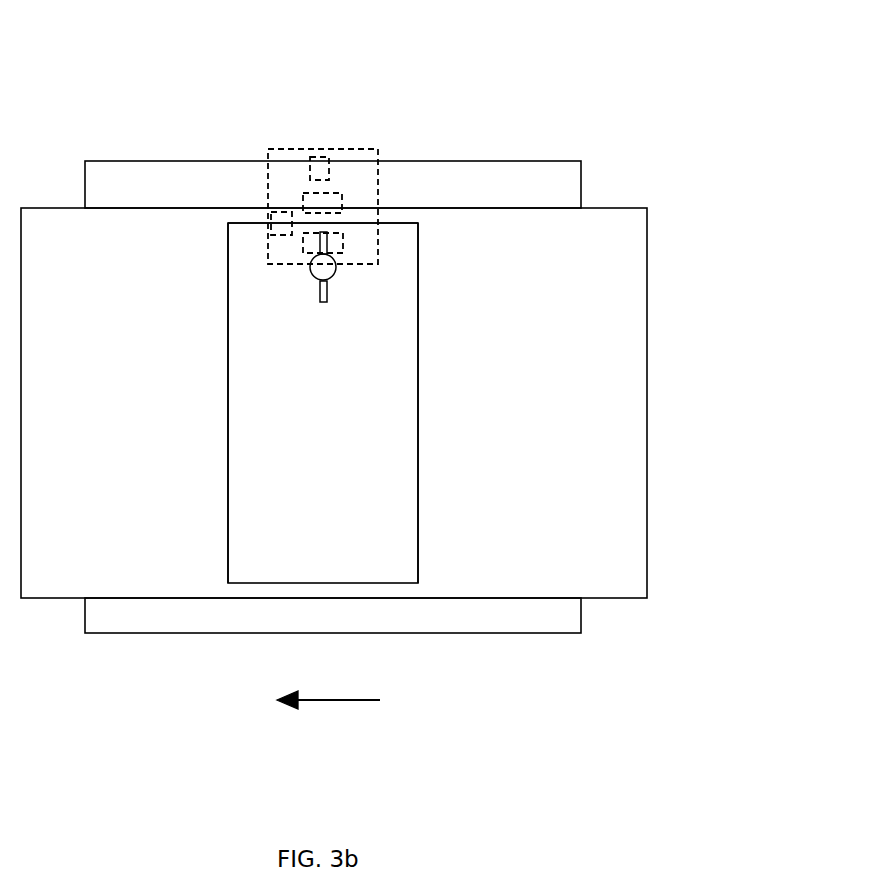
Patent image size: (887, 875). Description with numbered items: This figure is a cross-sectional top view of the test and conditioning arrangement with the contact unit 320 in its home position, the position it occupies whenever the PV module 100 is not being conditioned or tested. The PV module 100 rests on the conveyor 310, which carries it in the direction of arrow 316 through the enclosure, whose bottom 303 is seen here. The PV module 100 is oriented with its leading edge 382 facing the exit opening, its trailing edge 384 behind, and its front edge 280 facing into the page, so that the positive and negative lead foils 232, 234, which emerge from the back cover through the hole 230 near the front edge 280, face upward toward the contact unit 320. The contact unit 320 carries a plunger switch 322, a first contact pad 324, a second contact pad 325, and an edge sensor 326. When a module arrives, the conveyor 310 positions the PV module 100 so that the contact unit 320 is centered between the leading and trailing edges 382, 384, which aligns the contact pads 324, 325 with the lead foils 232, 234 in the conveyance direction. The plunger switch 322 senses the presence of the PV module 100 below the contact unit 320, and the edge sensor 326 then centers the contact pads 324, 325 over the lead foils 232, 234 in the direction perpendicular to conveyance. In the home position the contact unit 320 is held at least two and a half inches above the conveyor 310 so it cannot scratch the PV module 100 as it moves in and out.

The PV module 100 is at (418, 556).
The hole 230 is at (337, 271).
The positive lead foil 232 is at (328, 290).
The negative lead foil 234 is at (318, 240).
The front edge 280 is at (402, 223).
The bottom 303 is at (553, 633).
The conveyor 310 is at (625, 208).
The arrow 316 is at (318, 703).
The contact unit 320 is at (322, 149).
The plunger switch 322 is at (270, 222).
The first contact pad 324 is at (303, 247).
The second contact pad 325 is at (303, 205).
The edge sensor 326 is at (316, 160).
The leading edge 382 is at (228, 519).
The trailing edge 384 is at (418, 405).